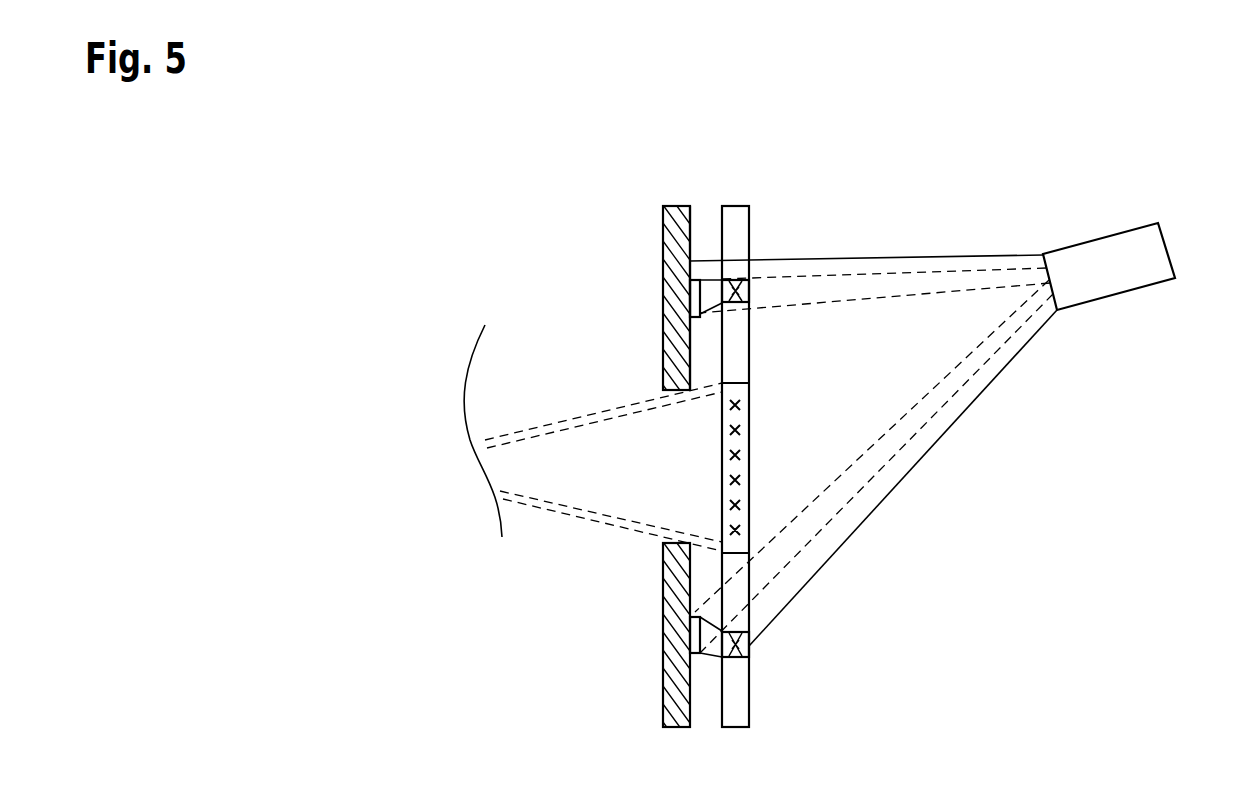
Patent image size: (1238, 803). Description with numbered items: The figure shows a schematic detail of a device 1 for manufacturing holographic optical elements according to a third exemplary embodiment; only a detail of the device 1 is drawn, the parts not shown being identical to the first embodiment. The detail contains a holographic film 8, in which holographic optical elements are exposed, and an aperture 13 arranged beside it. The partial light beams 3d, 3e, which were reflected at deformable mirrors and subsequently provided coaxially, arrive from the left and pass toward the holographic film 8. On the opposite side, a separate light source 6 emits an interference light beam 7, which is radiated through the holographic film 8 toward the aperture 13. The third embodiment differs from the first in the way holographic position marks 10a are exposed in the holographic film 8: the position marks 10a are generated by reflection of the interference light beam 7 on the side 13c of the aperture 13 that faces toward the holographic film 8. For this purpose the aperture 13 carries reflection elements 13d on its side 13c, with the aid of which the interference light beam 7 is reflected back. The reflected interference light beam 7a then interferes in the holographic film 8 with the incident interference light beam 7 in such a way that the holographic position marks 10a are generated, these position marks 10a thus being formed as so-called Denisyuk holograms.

The device 1 is at (1155, 163).
The separate light source 6 is at (1107, 253).
The interference light beam 7 is at (932, 262).
The reflected interference light beam 7a is at (704, 308).
The holographic film 8 is at (740, 231).
The holographic position marks 10a is at (748, 288).
The aperture 13 is at (671, 238).
The side of aperture 13c is at (704, 249).
The reflection elements 13d is at (694, 292).
The first reflected partial light beam 3d is at (593, 486).
The second reflected partial light beam 3e is at (550, 511).